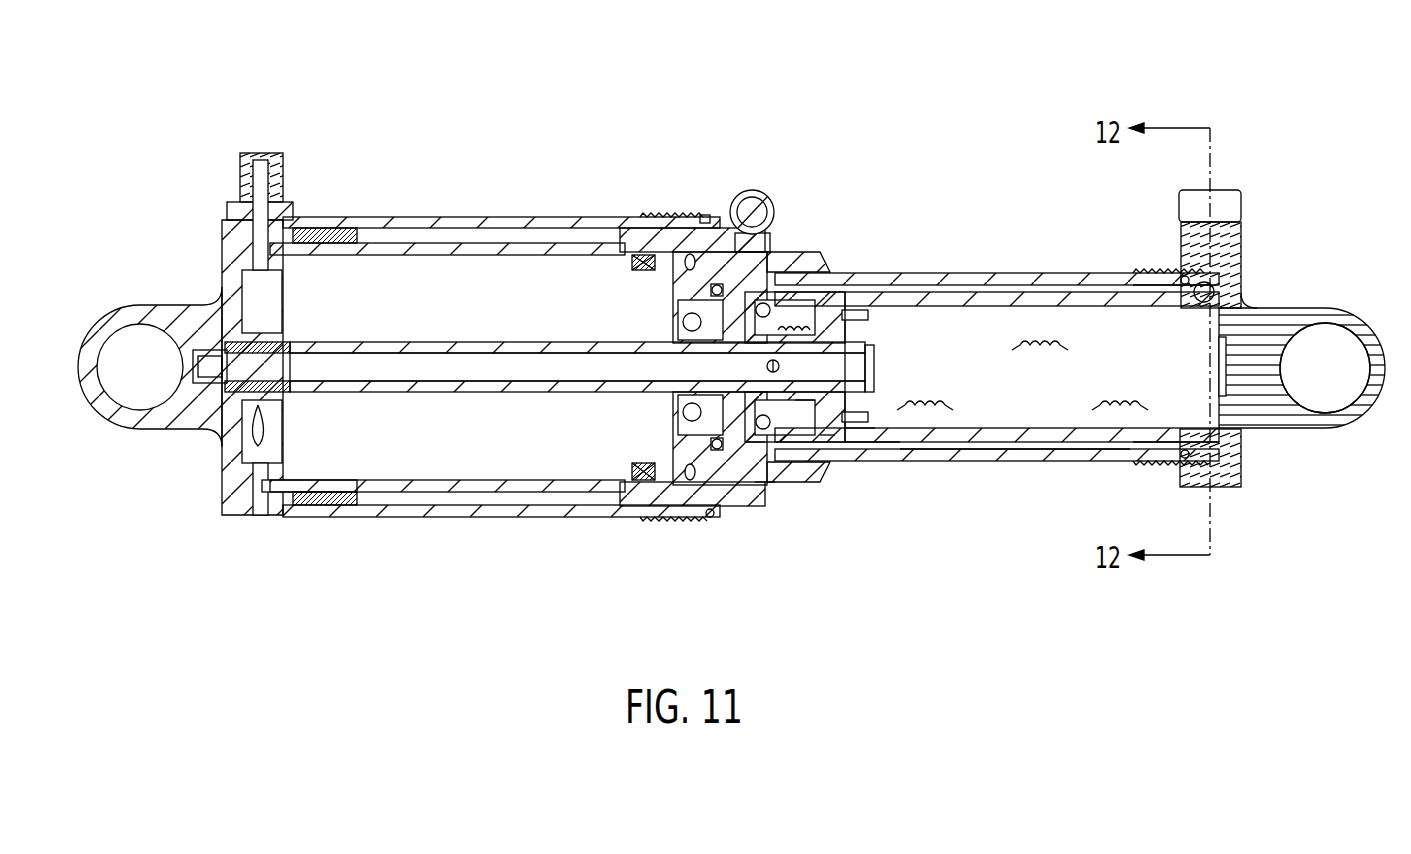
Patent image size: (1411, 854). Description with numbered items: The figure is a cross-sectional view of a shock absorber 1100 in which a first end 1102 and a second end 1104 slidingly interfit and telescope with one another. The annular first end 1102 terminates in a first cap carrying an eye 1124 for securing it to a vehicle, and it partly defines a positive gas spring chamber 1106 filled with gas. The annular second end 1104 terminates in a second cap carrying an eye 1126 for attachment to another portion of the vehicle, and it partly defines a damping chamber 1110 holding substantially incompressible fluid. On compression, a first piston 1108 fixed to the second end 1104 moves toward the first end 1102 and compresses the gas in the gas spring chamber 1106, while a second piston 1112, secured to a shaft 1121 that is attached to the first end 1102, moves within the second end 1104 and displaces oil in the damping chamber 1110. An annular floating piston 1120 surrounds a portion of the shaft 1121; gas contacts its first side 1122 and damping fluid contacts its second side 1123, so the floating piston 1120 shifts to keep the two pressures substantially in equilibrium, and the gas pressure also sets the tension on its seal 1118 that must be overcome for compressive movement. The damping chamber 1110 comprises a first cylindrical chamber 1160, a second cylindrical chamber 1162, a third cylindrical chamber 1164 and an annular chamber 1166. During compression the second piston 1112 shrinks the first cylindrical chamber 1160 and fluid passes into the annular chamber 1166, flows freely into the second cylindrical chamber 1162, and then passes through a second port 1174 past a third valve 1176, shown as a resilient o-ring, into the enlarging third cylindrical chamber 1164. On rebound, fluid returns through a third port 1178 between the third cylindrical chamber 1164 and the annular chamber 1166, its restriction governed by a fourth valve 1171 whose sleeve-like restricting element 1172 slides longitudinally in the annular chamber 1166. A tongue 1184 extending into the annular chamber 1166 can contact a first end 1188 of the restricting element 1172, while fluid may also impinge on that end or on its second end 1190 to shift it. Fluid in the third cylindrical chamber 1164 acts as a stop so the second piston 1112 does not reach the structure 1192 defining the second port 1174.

The shock absorber 1100 is at (424, 83).
The first end 1102 is at (515, 217).
The second end 1104 is at (1048, 273).
The positive gas spring chamber 1106 is at (313, 427).
The first piston 1108 is at (618, 478).
The damping chamber 1110 is at (1187, 313).
The second piston 1112 is at (860, 327).
The seal 1118 is at (736, 242).
The floating piston 1120 is at (668, 260).
The shaft 1121 is at (377, 345).
The first side 1122 is at (662, 432).
The second side 1123 is at (770, 287).
The eye 1124 is at (170, 308).
The eye 1126 is at (1327, 309).
The first cylindrical chamber 1160 is at (1093, 433).
The second cylindrical chamber 1162 is at (758, 438).
The third cylindrical chamber 1164 is at (803, 410).
The annular chamber 1166 is at (1035, 447).
The fourth valve 1171 is at (862, 448).
The restricting element 1172 is at (975, 438).
The second port 1174 is at (765, 487).
The third valve 1176 is at (765, 330).
The third port 1178 is at (848, 425).
The tongue 1184 is at (1186, 436).
The first end of restricting element 1188 is at (1137, 451).
The second end of restricting element 1190 is at (827, 430).
The second port defining structure 1192 is at (842, 315).